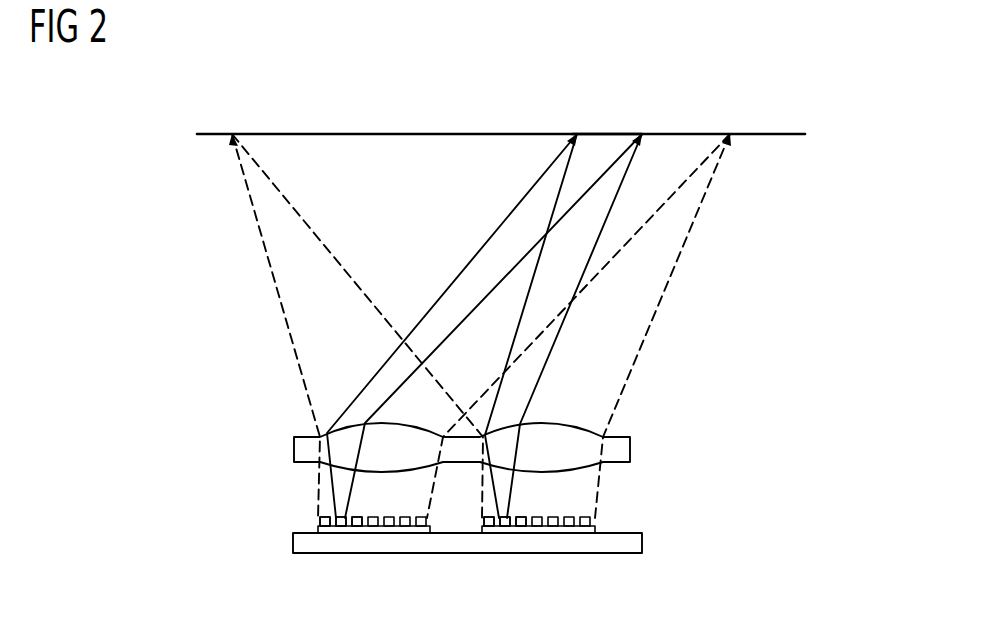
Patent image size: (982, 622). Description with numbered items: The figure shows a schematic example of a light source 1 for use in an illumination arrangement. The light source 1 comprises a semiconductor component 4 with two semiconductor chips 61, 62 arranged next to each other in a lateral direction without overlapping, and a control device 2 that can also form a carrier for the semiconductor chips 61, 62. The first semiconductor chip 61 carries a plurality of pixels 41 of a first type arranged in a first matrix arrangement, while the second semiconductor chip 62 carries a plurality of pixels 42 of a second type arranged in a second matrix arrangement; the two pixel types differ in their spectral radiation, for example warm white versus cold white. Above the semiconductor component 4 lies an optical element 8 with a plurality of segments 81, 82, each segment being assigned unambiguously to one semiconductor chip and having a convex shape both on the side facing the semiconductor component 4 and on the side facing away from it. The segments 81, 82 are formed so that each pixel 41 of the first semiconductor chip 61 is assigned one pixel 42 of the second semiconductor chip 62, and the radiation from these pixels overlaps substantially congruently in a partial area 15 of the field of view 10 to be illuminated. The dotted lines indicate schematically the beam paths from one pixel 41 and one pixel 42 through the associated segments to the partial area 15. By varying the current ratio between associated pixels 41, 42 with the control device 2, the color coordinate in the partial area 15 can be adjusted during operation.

The light source 1 is at (867, 423).
The control device 2 is at (608, 552).
The semiconductor component 4 is at (803, 495).
The optical element 8 is at (631, 450).
The field of view 10 is at (805, 97).
The partial area 15 is at (642, 130).
The pixels of a first type 41 is at (325, 526).
The pixels of a second type 42 is at (492, 526).
The first semiconductor chip 61 is at (318, 530).
The second semiconductor chip 62 is at (595, 530).
The segment 81 is at (398, 430).
The segment 82 is at (553, 430).